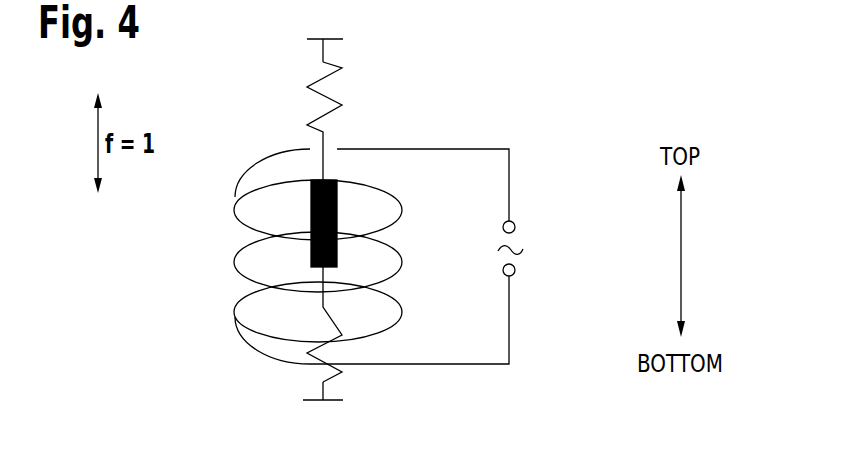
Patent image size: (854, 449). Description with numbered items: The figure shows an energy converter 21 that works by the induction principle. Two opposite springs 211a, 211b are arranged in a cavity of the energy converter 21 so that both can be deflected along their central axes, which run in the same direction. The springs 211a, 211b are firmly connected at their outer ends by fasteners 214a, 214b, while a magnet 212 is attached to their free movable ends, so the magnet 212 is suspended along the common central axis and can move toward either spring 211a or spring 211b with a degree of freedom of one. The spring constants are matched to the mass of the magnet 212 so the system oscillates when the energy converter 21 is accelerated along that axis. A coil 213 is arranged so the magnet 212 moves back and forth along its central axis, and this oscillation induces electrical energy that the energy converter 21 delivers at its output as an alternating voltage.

The energy converter 21 is at (546, 133).
The spring 211a is at (316, 78).
The spring 211b is at (313, 363).
The magnet 212 is at (333, 180).
The coil 213 is at (235, 240).
The fastener 214a is at (357, 41).
The fastener 214b is at (355, 402).